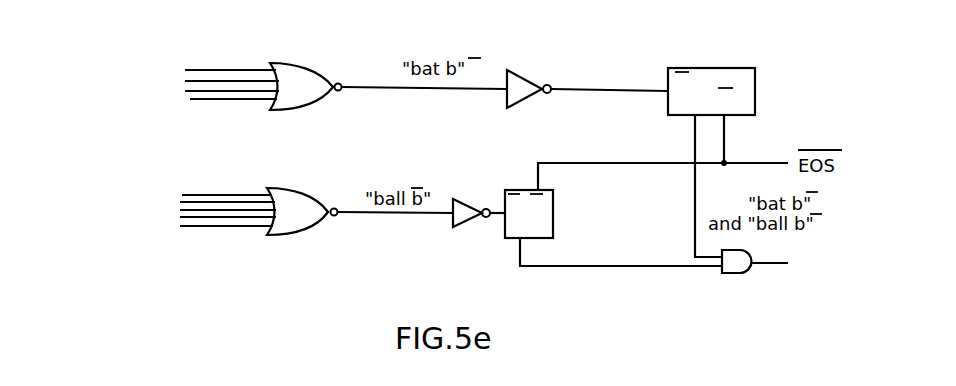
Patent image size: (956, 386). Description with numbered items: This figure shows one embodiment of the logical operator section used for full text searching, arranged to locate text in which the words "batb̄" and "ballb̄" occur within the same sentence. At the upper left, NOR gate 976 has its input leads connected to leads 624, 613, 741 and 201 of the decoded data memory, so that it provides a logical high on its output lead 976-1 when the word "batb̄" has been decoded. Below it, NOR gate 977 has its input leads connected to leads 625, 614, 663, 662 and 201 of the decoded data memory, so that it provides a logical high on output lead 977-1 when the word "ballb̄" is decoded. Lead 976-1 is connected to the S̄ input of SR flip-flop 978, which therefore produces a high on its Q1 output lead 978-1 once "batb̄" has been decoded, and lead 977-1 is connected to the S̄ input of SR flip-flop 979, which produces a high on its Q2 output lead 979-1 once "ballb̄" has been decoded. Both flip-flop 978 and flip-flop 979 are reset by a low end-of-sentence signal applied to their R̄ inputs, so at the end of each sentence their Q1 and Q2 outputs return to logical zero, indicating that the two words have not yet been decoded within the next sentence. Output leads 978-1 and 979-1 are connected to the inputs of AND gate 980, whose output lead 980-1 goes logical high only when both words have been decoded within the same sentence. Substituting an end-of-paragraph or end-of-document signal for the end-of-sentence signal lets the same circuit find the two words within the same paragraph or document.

The lead of decoded data memory 624 is at (185, 69).
The lead of decoded data memory 613 is at (185, 81).
The lead of decoded data memory 741 is at (185, 91).
The lead of decoded data memory 201 is at (190, 100).
The NOR gate 976 is at (322, 66).
The output lead 976-1 is at (640, 88).
The SR flip-flop 978 is at (755, 92).
The Q1 output lead 978-1 is at (694, 205).
The lead of decoded data memory 625 is at (182, 195).
The lead of decoded data memory 614 is at (180, 202).
The lead of decoded data memory 663 is at (180, 210).
The lead of decoded data memory 662 is at (180, 217).
The NOR gate 977 is at (318, 192).
The output lead 977-1 is at (450, 222).
The SR flip-flop 979 is at (553, 198).
The Q2 output lead 979-1 is at (520, 248).
The AND gate 980 is at (728, 274).
The output lead 980-1 is at (818, 287).